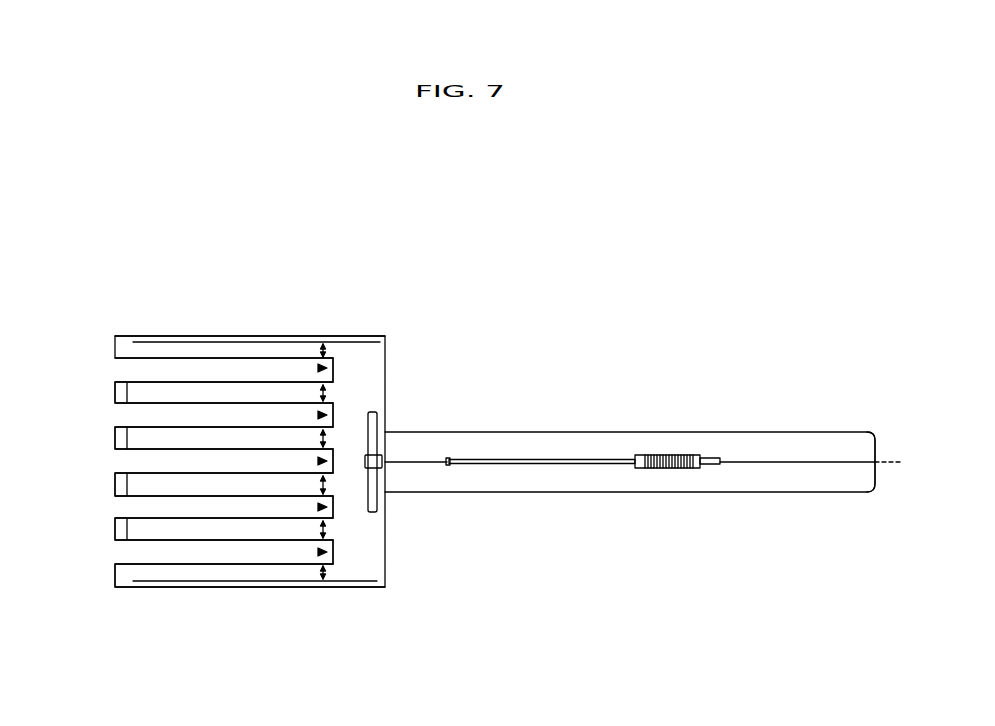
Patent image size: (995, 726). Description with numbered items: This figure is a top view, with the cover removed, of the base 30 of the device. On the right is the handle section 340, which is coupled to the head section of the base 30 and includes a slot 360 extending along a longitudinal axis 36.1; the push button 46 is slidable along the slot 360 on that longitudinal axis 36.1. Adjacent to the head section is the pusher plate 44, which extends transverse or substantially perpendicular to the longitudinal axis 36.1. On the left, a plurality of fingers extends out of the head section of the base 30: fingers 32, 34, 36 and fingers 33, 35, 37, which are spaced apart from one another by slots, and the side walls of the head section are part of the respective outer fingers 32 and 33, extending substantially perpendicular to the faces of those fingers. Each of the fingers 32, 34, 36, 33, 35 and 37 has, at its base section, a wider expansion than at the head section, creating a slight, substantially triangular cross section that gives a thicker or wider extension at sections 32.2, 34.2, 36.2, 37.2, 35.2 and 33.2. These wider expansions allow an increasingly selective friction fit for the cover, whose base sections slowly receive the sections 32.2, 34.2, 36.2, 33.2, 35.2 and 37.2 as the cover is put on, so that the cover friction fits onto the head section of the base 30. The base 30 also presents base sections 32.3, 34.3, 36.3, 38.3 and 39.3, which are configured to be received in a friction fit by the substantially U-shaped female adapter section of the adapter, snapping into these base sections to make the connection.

The base 30 is at (477, 337).
The finger 32 is at (245, 336).
The wider expansion section 32.2 is at (323, 344).
The base section 32.3 is at (318, 368).
The finger 34 is at (125, 392).
The wider expansion section 34.2 is at (324, 387).
The base section 34.3 is at (318, 415).
The finger 36 is at (125, 437).
The wider expansion section 36.2 is at (324, 432).
The base section 36.3 is at (318, 461).
The finger 37 is at (132, 485).
The wider expansion section 37.2 is at (326, 482).
The base section 38.3 is at (318, 507).
The finger 35 is at (132, 532).
The wider expansion section 35.2 is at (328, 530).
The base section 39.3 is at (318, 552).
The finger 33 is at (115, 585).
The wider expansion section 33.2 is at (328, 573).
The pusher plate 44 is at (378, 410).
The handle section 340 is at (542, 442).
The longitudinal axis 36.1 is at (888, 463).
The slot 360 is at (520, 463).
The push button 46 is at (692, 464).